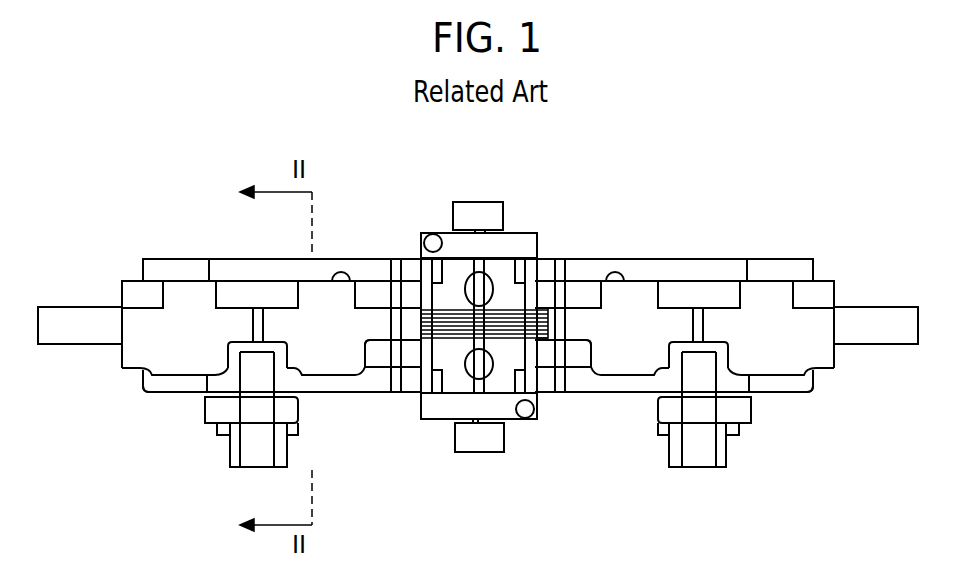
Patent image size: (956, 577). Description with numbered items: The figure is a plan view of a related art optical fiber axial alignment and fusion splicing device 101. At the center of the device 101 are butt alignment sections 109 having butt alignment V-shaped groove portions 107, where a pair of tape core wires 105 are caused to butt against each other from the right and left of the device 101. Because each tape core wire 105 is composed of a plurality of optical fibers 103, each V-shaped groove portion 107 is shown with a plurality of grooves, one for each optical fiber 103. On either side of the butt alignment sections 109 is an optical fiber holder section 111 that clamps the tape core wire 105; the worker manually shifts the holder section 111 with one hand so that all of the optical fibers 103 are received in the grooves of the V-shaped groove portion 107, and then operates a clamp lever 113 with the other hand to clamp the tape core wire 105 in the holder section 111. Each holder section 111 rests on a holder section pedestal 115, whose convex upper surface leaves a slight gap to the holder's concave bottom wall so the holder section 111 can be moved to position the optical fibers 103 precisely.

The optical fiber axial alignment and fusion splicing device 101 is at (698, 238).
The optical fibers 103 is at (425, 308).
The tape core wires 105 is at (62, 322).
The butt alignment V-shaped groove portion 107 is at (448, 343).
The butt alignment section 109 is at (504, 271).
The optical fiber holder section 111 is at (330, 362).
The clamp lever 113 is at (213, 410).
The holder section pedestal 115 is at (162, 383).